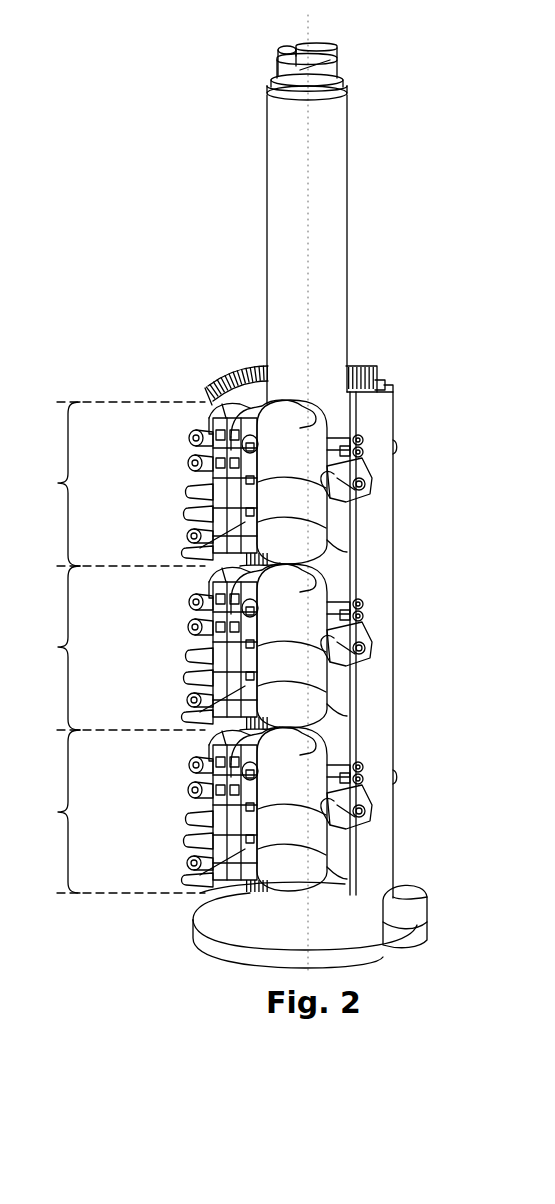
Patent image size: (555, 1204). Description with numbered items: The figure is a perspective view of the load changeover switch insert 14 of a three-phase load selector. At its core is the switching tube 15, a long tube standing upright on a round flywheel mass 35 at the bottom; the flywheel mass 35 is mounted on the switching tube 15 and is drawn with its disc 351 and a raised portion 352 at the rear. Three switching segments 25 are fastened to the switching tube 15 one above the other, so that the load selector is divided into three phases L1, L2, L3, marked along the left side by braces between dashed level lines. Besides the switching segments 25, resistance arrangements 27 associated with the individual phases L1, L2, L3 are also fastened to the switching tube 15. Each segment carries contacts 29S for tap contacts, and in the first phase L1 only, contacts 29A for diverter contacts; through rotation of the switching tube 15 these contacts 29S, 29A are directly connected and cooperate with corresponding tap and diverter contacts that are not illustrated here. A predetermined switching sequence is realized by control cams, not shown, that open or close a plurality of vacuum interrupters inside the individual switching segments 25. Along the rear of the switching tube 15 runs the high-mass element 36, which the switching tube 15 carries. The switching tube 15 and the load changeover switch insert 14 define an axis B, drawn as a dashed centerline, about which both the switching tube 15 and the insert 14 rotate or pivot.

The axis B is at (308, 130).
The load changeover switch insert 14 is at (245, 330).
The switching tube 15 is at (333, 185).
The switching segments 25 is at (172, 458).
The resistance arrangements 27 is at (207, 407).
The contacts for diverter contacts 29A is at (226, 395).
The contacts for tap contacts 29S is at (196, 484).
The high-mass element 36 is at (380, 500).
The flywheel mass 35 is at (345, 919).
The base disc 351 is at (248, 928).
The base boss 352 is at (400, 893).
The first phase L1 is at (58, 483).
The second phase L2 is at (58, 647).
The third phase L3 is at (58, 812).